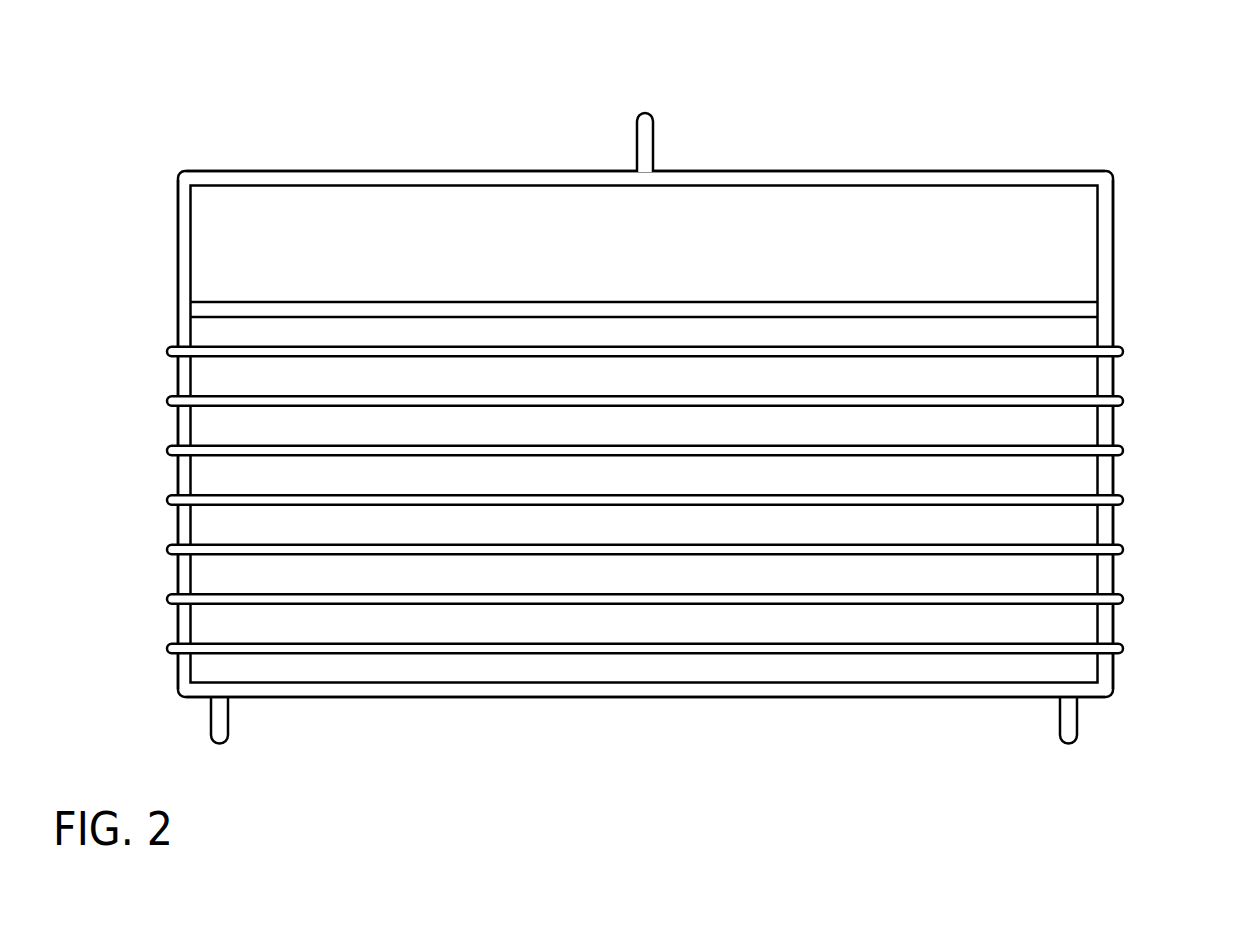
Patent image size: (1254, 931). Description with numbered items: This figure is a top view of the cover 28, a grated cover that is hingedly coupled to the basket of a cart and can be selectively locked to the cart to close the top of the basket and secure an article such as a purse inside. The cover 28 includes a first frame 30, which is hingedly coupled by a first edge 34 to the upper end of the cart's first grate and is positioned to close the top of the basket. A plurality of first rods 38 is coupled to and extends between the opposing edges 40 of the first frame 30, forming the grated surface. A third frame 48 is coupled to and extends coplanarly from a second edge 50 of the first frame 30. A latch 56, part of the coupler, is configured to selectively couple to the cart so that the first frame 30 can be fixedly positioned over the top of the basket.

The cover 28 is at (1118, 240).
The first frame 30 is at (255, 307).
The first edge 34 is at (661, 701).
The first rods 38 is at (964, 398).
The opposing edges 40 is at (174, 475).
The third frame 48 is at (882, 176).
The second edge 50 is at (376, 303).
The latch 56 is at (650, 143).